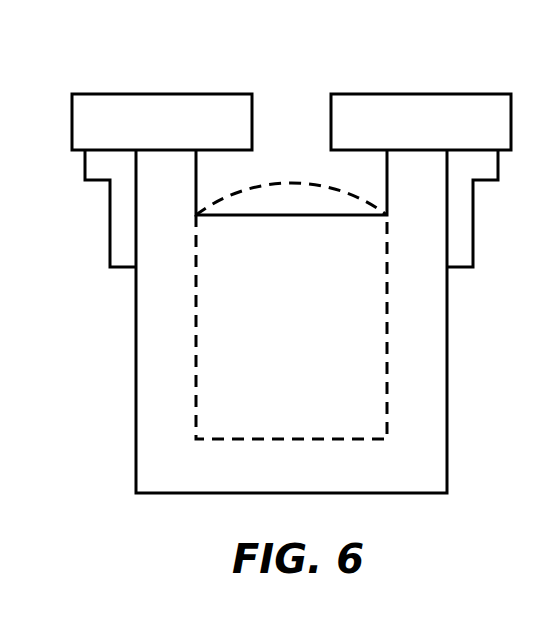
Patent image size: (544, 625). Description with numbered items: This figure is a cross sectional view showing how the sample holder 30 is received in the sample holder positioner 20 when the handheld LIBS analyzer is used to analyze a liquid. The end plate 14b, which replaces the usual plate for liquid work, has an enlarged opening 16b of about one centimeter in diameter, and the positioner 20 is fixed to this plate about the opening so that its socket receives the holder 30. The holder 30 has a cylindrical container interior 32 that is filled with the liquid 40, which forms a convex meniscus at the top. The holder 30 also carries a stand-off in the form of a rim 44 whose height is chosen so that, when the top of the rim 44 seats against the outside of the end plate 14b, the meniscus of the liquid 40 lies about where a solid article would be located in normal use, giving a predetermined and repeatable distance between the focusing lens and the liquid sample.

The end plate 14b is at (495, 115).
The enlarged opening 16b is at (309, 125).
The sample holder positioner 20 is at (470, 222).
The sample holder 30 is at (160, 440).
The cylindrical container interior 32 is at (362, 386).
The liquid 40 is at (287, 200).
The rim 44 is at (170, 185).